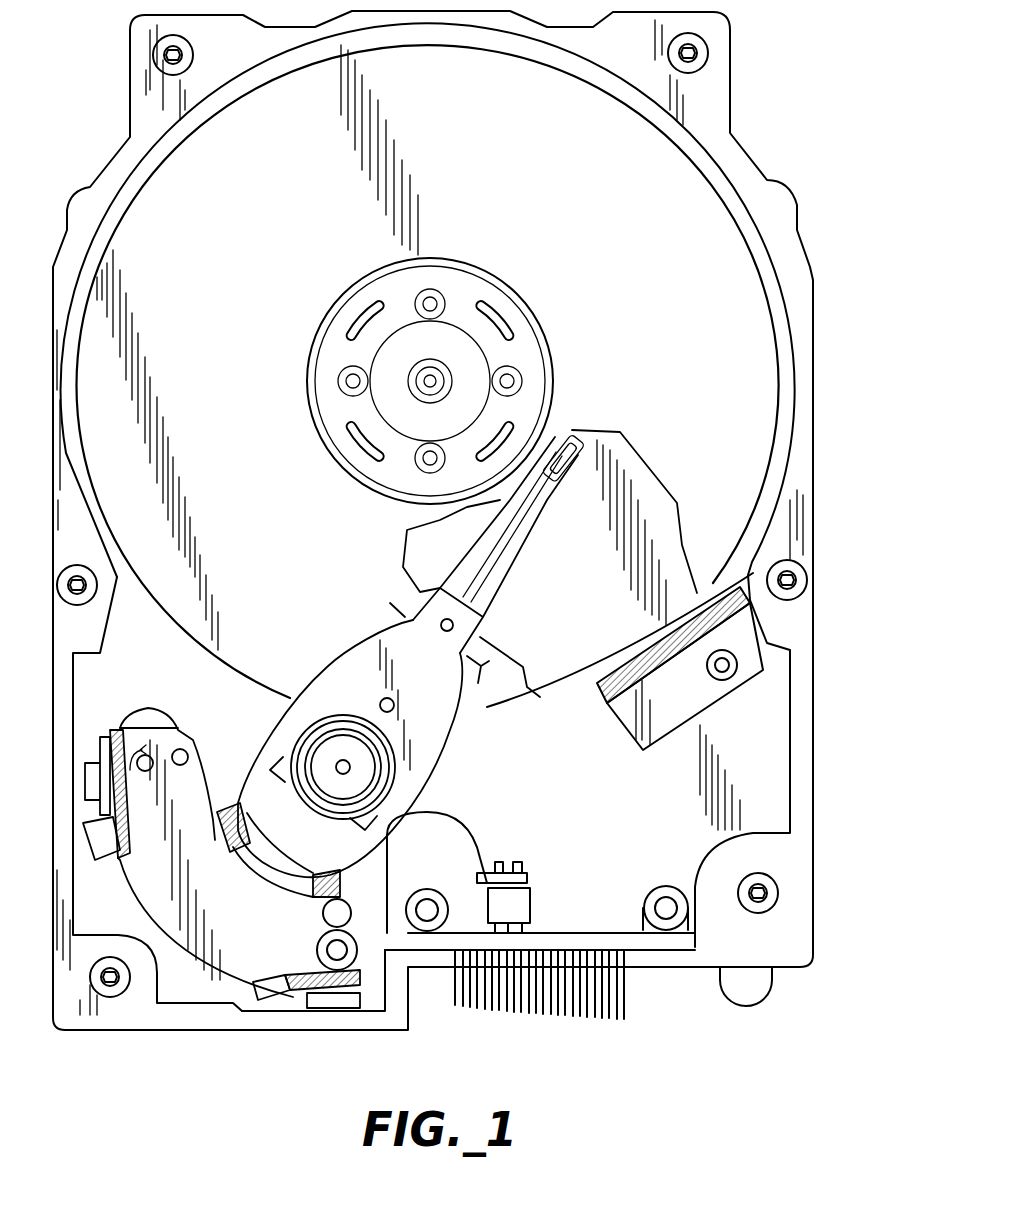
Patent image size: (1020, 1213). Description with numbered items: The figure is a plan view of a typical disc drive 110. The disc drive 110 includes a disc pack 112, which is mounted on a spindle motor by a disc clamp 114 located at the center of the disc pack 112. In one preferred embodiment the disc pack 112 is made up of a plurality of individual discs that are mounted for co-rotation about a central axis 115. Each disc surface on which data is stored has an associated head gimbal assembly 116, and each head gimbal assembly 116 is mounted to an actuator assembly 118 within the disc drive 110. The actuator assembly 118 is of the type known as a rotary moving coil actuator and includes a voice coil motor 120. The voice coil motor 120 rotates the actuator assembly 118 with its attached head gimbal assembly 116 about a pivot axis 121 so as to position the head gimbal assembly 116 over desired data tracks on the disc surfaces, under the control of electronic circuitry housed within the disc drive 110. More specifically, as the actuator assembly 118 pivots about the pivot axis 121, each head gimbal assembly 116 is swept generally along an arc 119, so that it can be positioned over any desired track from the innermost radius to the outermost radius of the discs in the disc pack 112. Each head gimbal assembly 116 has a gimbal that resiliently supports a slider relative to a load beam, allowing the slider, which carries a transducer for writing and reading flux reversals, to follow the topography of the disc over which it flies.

The disc drive 110 is at (433, 520).
The disc pack 112 is at (492, 213).
The disc clamp 114 is at (380, 270).
The central axis 115 is at (433, 380).
The head gimbal assembly 116 is at (577, 440).
The actuator assembly 118 is at (477, 648).
The arc 119 is at (507, 490).
The voice coil motor 120 is at (190, 731).
The pivot axis 121 is at (343, 760).